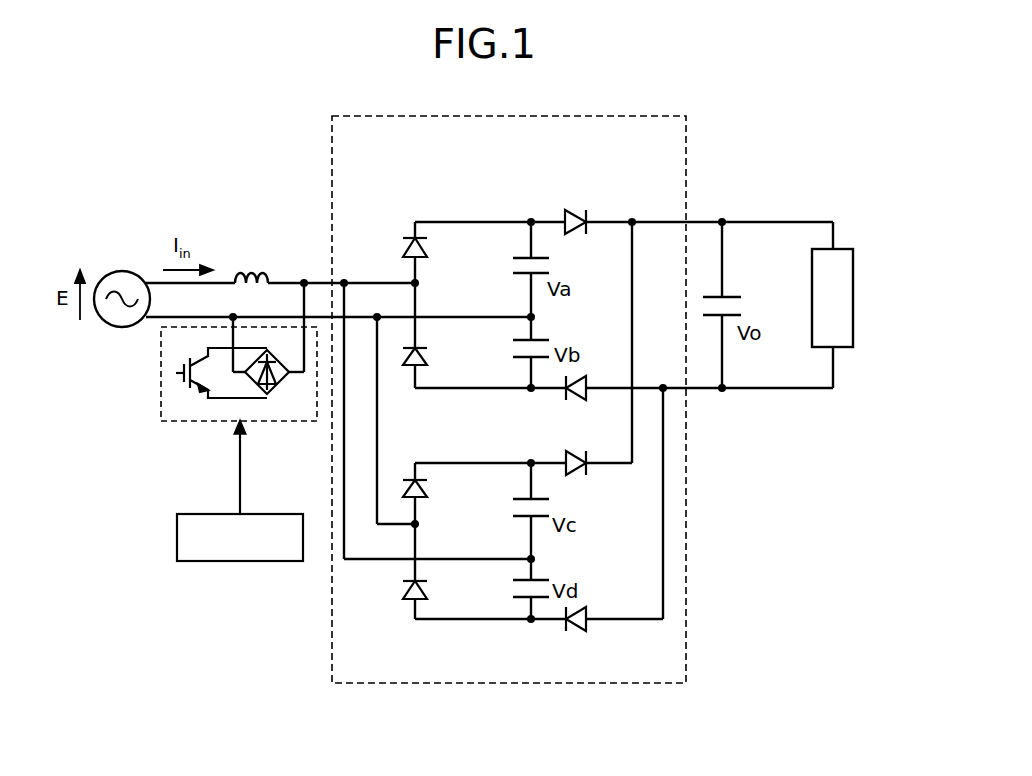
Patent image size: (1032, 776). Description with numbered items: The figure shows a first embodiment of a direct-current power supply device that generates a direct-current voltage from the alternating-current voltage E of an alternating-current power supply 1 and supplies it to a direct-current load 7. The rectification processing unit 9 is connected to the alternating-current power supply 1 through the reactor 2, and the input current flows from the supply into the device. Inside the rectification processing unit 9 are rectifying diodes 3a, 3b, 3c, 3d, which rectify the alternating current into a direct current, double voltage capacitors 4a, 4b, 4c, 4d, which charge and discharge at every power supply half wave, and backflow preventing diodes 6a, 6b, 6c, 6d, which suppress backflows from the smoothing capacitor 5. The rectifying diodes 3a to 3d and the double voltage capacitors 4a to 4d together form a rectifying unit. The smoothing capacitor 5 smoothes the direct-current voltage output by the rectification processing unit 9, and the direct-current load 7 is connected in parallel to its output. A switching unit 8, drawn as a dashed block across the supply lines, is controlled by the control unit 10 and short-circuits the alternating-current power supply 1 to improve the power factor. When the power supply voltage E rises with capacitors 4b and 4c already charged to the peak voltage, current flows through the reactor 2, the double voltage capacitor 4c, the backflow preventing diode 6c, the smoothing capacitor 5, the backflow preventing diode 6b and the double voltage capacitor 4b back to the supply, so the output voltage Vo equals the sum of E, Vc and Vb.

The alternating-current power supply 1 is at (118, 327).
The reactor 2 is at (262, 266).
The rectifying diode 3a is at (407, 244).
The rectifying diode 3b is at (426, 358).
The rectifying diode 3c is at (426, 488).
The rectifying diode 3d is at (410, 600).
The double voltage capacitor 4a is at (518, 256).
The double voltage capacitor 4b is at (520, 366).
The double voltage capacitor 4c is at (517, 500).
The double voltage capacitor 4d is at (524, 600).
The smoothing capacitor 5 is at (734, 296).
The backflow preventing diode 6a is at (577, 216).
The backflow preventing diode 6b is at (584, 380).
The backflow preventing diode 6c is at (584, 462).
The backflow preventing diode 6d is at (586, 612).
The direct-current load 7 is at (854, 262).
The switching unit 8 is at (300, 421).
The rectification processing unit 9 is at (686, 617).
The control unit 10 is at (265, 562).